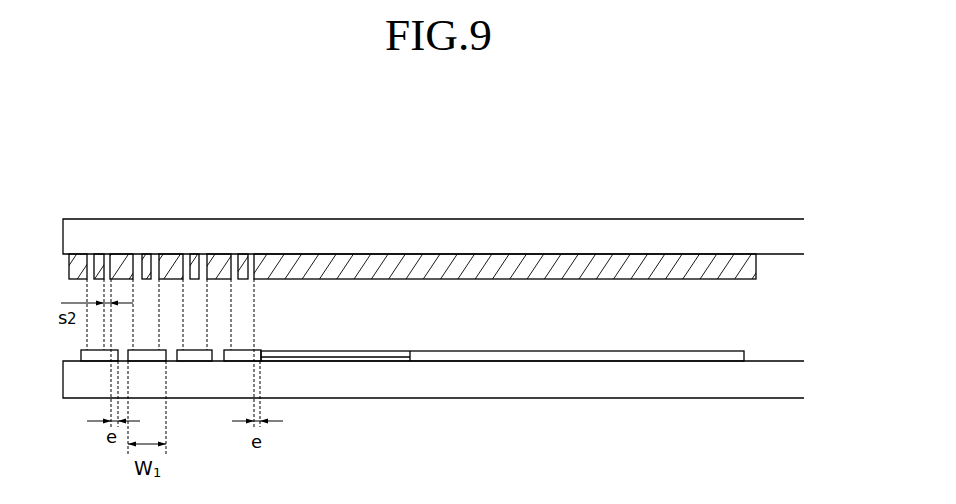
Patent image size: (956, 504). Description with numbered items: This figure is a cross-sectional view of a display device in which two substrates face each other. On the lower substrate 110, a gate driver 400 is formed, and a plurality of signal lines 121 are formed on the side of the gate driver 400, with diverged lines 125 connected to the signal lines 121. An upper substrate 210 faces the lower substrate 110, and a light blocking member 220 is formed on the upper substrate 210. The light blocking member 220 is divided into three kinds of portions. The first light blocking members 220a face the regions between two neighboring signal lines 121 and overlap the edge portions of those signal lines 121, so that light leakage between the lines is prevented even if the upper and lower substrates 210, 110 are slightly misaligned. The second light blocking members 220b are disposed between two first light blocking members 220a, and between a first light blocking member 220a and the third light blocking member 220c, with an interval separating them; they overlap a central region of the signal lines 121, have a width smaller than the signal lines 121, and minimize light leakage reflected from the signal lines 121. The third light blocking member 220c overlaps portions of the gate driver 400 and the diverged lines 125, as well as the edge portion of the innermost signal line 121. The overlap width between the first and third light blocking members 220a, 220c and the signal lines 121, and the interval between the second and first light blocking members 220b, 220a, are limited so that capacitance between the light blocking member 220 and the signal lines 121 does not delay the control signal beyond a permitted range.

The upper substrate 210 is at (472, 237).
The light blocking member 220 is at (414, 208).
The first light blocking members 220a is at (233, 262).
The second light blocking members 220b is at (249, 262).
The third light blocking member 220c is at (505, 228).
The lower substrate 110 is at (419, 380).
The signal lines 121 is at (194, 357).
The diverged lines 125 is at (323, 355).
The gate driver 400 is at (508, 352).